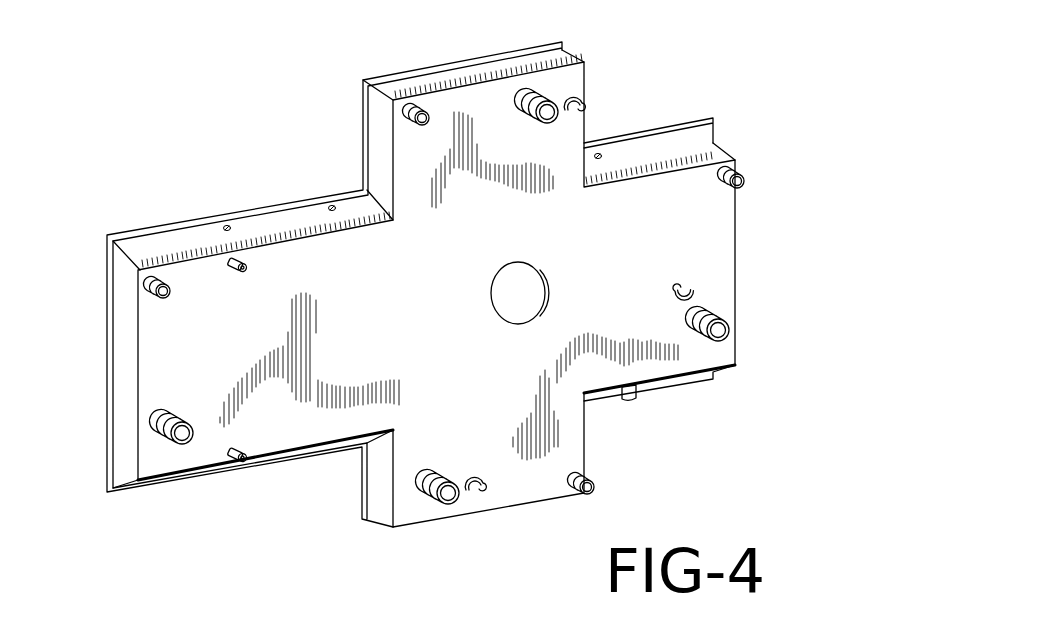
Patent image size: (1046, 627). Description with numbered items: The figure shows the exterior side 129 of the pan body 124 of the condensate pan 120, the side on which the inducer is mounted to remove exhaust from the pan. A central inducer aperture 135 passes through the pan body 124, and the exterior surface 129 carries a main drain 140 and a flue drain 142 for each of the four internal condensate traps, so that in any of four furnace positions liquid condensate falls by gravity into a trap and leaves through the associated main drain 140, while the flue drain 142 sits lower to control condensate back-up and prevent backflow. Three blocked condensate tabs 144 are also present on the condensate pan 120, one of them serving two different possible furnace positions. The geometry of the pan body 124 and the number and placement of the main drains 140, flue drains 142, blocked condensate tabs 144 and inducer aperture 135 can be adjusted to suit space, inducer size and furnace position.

The condensate pan 120 is at (690, 249).
The pan body 124 is at (565, 58).
The exterior surface 129 is at (196, 323).
The inducer aperture 135 is at (493, 297).
The main drain 140 is at (528, 100).
The flue drain 142 is at (408, 121).
The blocked condensate tab 144 is at (233, 262).